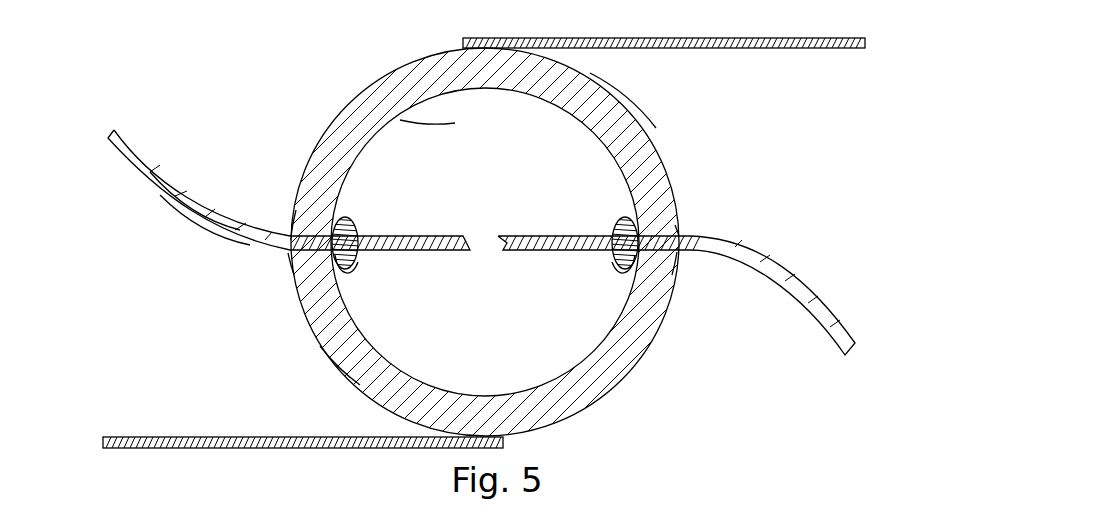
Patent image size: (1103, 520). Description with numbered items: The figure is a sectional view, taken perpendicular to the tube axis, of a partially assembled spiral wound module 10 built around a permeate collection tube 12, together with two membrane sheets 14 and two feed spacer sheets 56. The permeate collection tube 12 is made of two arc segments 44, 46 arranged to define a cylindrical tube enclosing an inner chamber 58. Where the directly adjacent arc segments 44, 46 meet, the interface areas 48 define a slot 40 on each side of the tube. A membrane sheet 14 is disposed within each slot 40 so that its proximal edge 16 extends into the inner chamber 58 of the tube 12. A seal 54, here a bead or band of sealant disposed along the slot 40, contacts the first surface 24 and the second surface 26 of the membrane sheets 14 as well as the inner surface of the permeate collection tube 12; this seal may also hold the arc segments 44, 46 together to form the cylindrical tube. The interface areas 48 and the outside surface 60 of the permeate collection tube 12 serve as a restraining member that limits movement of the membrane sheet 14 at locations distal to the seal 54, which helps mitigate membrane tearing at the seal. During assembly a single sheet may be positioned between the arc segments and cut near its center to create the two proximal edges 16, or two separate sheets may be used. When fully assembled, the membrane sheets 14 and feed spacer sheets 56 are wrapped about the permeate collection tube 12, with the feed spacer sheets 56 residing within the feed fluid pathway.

The spiral wound module 10 is at (195, 75).
The permeate collection tube 12 is at (641, 374).
The membrane sheet 14 is at (127, 160).
The proximal edge 16 is at (460, 236).
The first surface 24 is at (181, 193).
The second surface 26 is at (197, 223).
The slot 40 is at (296, 210).
The arc segment 44 is at (656, 128).
The arc segment 46 is at (320, 346).
The interface area 48 is at (340, 210).
The seal 54 is at (360, 264).
The feed spacer sheet 56 is at (745, 38).
The inner chamber 58 is at (455, 123).
The outside surface 60 is at (288, 253).